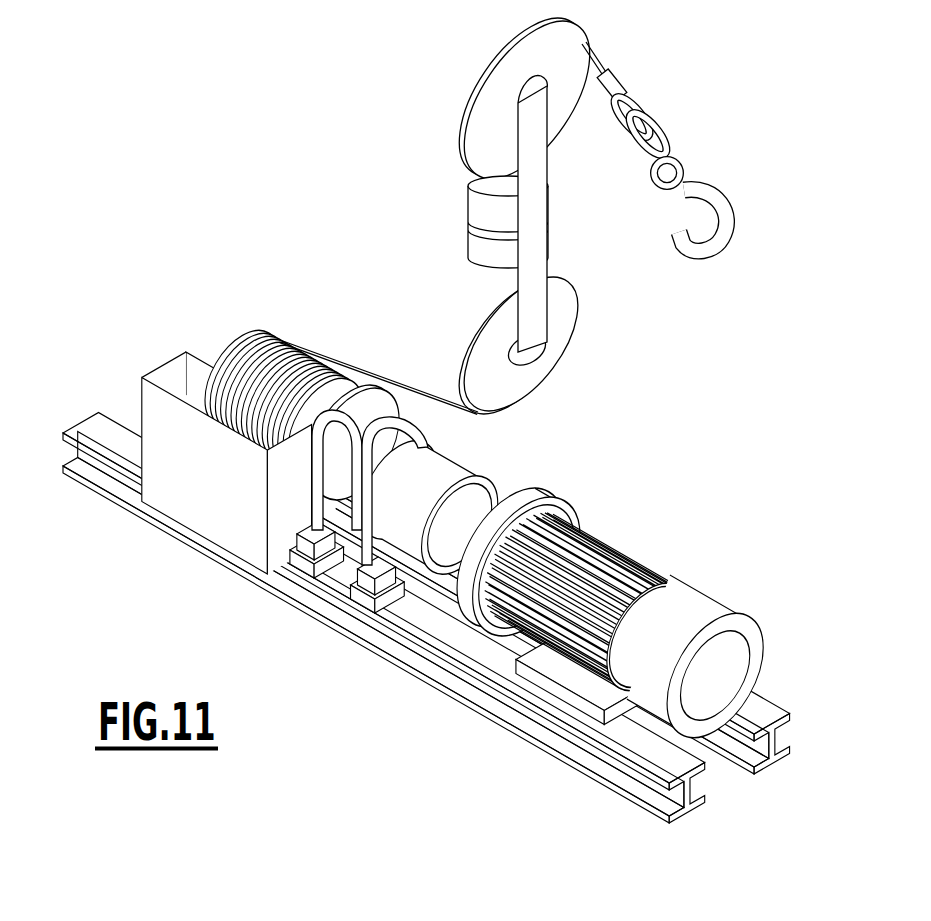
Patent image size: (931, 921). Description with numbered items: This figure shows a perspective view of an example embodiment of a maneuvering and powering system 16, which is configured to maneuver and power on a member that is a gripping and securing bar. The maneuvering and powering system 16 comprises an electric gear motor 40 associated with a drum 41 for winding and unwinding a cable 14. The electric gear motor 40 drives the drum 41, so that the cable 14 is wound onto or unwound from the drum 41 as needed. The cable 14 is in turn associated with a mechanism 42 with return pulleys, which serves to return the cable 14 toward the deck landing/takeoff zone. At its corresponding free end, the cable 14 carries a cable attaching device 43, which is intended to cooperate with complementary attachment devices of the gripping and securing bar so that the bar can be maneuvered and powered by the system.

The cable 14 is at (378, 340).
The maneuvering and powering system 16 is at (426, 618).
The electric gear motor 40 is at (610, 604).
The drum 41 is at (249, 421).
The mechanism with return pulleys 42 is at (480, 216).
The cable attaching device 43 is at (670, 146).